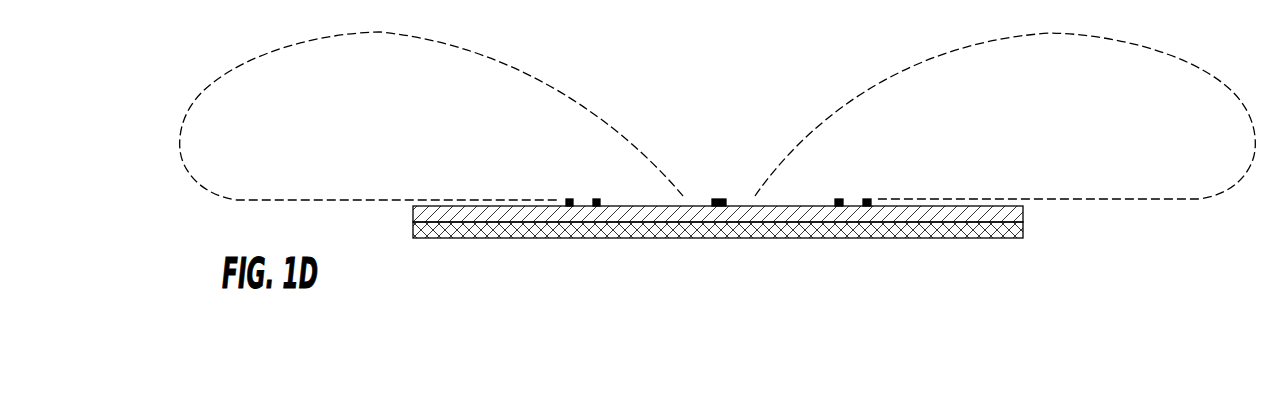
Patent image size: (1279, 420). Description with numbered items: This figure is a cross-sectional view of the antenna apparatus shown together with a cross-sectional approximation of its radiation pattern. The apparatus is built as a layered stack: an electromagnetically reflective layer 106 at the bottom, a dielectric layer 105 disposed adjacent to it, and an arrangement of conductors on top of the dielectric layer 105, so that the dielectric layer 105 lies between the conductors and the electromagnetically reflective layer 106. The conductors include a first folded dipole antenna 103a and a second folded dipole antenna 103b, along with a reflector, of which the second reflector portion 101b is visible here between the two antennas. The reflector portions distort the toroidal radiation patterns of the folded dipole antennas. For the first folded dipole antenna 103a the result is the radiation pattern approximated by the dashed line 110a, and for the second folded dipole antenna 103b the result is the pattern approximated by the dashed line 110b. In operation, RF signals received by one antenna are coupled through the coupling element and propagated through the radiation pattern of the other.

The second reflector portion 101b is at (717, 198).
The first folded dipole antenna 103a is at (596, 199).
The second folded dipole antenna 103b is at (840, 199).
The dielectric layer 105 is at (1023, 213).
The electromagnetically reflective layer 106 is at (1023, 230).
The dashed line 110a is at (262, 52).
The dashed line 110b is at (1175, 50).